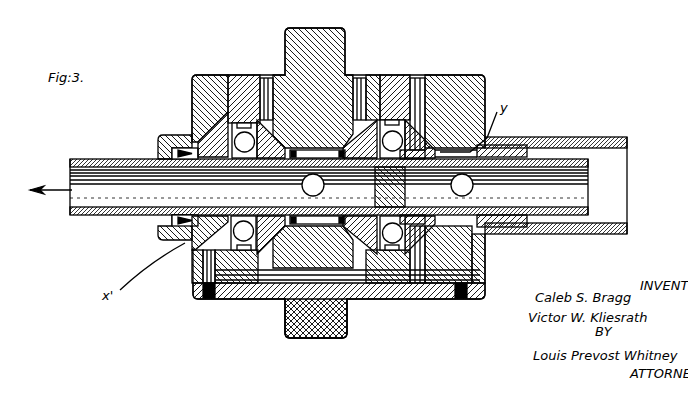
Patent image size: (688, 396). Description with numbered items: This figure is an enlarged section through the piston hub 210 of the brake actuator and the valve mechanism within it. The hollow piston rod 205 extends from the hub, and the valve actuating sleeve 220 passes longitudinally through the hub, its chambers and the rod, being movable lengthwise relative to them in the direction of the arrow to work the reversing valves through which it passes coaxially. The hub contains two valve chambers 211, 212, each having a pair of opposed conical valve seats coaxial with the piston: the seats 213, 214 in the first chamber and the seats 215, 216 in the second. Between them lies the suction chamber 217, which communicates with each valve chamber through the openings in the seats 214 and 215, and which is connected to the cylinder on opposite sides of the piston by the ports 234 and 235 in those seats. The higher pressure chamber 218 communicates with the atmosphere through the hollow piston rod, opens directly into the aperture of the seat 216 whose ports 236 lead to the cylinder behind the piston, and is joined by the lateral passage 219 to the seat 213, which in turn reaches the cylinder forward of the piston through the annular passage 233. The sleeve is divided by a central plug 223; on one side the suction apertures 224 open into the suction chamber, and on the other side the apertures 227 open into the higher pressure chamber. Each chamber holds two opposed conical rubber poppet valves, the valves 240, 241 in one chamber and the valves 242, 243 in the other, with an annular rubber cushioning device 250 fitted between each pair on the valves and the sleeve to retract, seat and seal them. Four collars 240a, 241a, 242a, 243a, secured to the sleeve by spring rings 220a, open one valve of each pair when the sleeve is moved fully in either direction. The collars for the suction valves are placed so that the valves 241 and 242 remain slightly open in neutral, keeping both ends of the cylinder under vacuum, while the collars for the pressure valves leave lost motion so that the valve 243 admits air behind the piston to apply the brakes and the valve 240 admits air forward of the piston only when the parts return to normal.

The hollow piston rod 205 is at (588, 137).
The piston hub 210 is at (357, 183).
The valve chamber 211 is at (230, 78).
The valve chamber 212 is at (388, 118).
The valve seat 213 is at (196, 268).
The valve seat 214 is at (262, 246).
The valve seat 215 is at (367, 272).
The valve seat 216 is at (477, 270).
The suction chamber 217 is at (312, 226).
The higher pressure chamber 218 is at (490, 234).
The lateral passage 219 is at (320, 280).
The valve actuating sleeve 220 is at (88, 216).
The spring rings 220a is at (172, 155).
The central plug 223 is at (378, 186).
The suction apertures 224 is at (302, 188).
The apertures 227 is at (451, 187).
The annular passage 233 is at (170, 220).
The ports 234 is at (268, 78).
The ports 235 is at (380, 122).
The ports 236 is at (418, 86).
The poppet valve 240 is at (205, 137).
The collar 240a is at (166, 226).
The poppet valve 241 is at (242, 252).
The collar 241a is at (292, 143).
The poppet valve 242 is at (392, 243).
The collar 242a is at (352, 301).
The poppet valve 243 is at (426, 130).
The collar 243a is at (492, 138).
The rubber cushioning device 250 is at (226, 300).